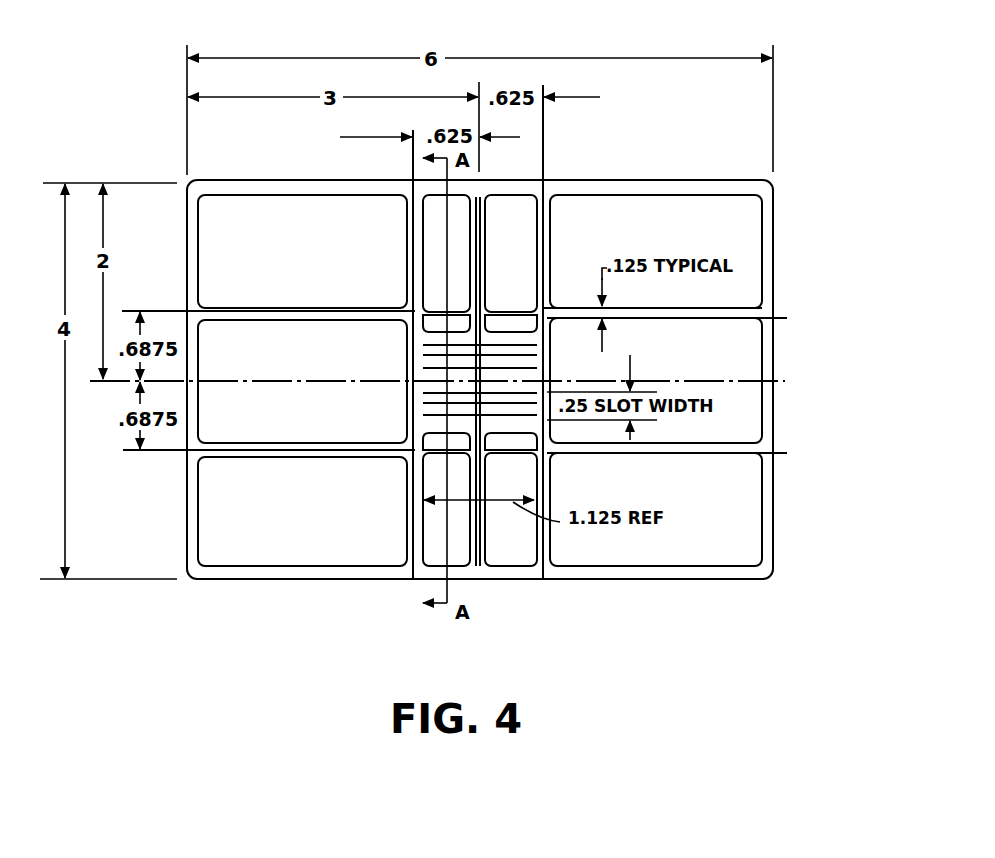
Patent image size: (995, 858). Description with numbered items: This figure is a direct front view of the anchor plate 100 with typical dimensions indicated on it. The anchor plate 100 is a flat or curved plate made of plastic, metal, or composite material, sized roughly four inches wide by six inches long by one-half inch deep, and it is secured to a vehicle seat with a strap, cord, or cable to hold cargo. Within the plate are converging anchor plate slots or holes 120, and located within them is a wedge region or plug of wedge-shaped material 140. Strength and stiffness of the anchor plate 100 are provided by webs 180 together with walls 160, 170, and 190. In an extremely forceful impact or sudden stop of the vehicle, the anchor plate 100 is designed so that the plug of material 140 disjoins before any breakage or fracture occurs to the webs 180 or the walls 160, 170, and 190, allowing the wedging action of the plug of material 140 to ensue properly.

The anchor plate 100 is at (487, 339).
The anchor plate slots 120 is at (416, 348).
The plug of wedge-shaped material 140 is at (423, 381).
The walls 160 is at (740, 317).
The walls 170 is at (408, 245).
The webs 180 is at (748, 290).
The walls 190 is at (765, 190).